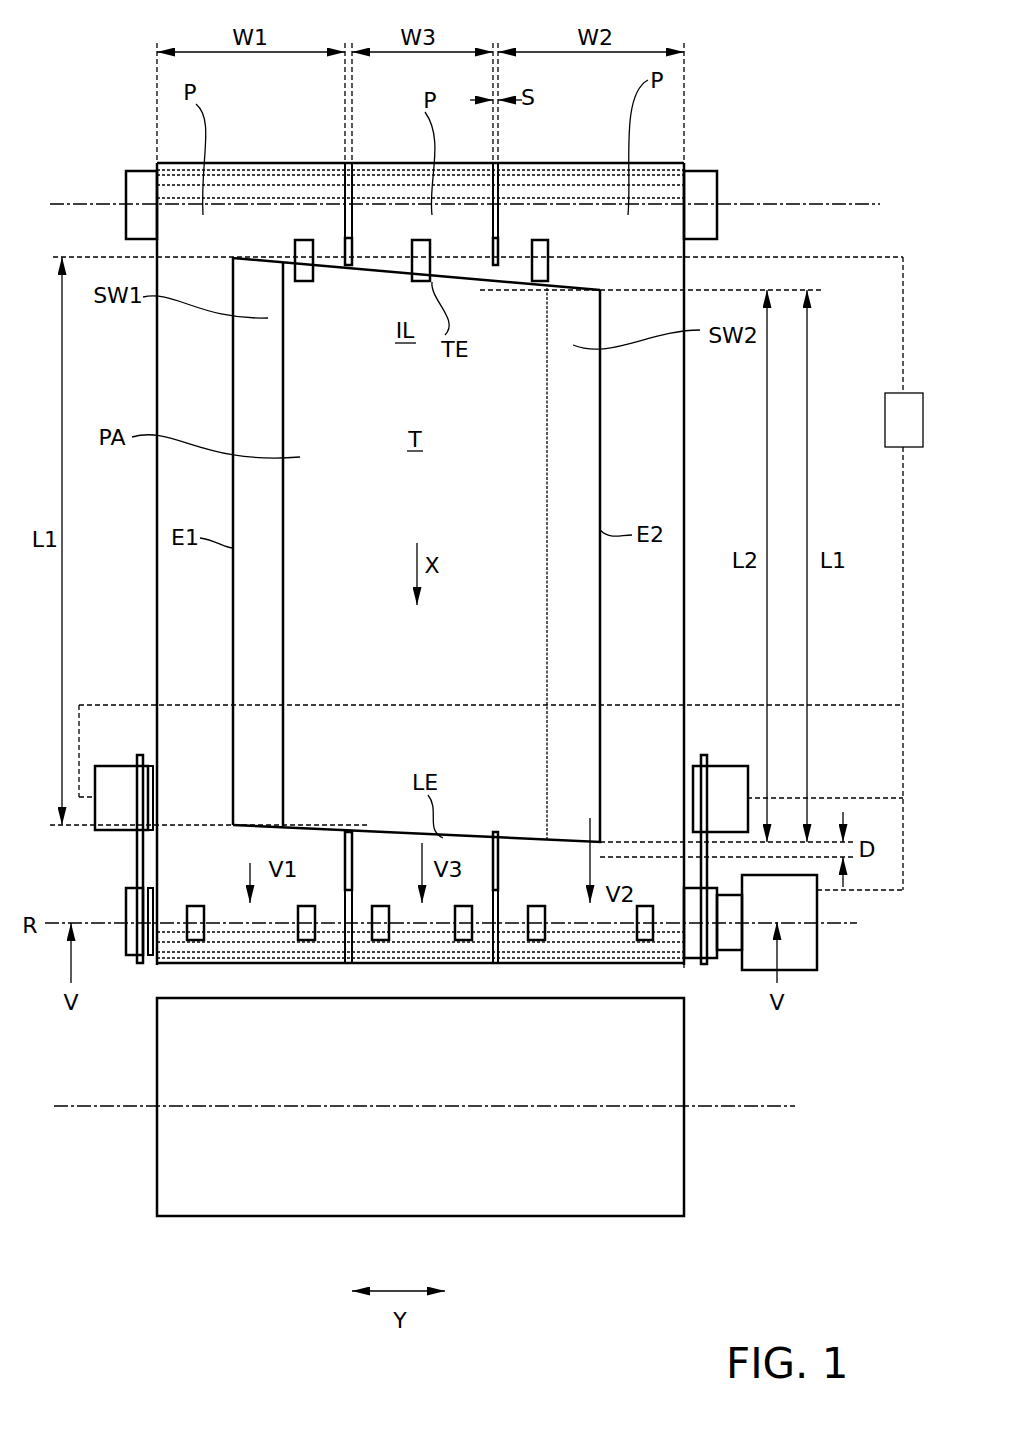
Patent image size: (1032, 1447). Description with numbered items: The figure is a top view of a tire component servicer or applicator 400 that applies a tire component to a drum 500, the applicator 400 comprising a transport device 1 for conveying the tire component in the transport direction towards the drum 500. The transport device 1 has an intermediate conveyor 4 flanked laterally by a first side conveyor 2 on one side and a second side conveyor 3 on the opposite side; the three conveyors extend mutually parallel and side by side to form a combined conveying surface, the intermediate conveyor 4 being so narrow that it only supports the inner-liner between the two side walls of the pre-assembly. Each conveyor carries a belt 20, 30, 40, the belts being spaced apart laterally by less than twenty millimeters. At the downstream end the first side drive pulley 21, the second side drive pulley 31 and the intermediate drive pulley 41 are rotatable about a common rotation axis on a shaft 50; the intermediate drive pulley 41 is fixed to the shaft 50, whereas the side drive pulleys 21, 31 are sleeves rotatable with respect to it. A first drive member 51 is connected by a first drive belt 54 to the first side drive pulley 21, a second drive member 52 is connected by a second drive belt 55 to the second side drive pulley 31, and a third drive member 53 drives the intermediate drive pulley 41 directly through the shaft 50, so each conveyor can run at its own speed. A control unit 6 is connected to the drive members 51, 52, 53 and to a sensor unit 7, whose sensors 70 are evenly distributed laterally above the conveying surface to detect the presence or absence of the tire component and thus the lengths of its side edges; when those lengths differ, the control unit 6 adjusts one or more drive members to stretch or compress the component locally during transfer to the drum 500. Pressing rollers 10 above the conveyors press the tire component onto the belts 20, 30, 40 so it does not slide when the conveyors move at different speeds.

The transport device 1 is at (830, 112).
The tire component servicer or applicator 400 is at (135, 88).
The sensor unit 7 is at (650, 220).
The sensors 70 is at (303, 240).
The first side conveyor 2 is at (172, 345).
The belt 20 is at (214, 665).
The second side conveyor 3 is at (657, 387).
The belt 30 is at (664, 748).
The intermediate conveyor 4 is at (403, 938).
The belt 40 is at (396, 885).
The intermediate drive pulley 41 is at (494, 965).
The pressing rollers 10 is at (195, 940).
The first drive member 51 is at (118, 830).
The first drive belt 54 is at (140, 862).
The first side drive pulley 21 is at (128, 953).
The second drive member 52 is at (748, 778).
The second drive belt 55 is at (707, 822).
The shaft 50 is at (728, 948).
The third drive member 53 is at (818, 940).
The second side drive pulley 31 is at (686, 968).
The control unit 6 is at (897, 433).
The drum 500 is at (179, 1275).